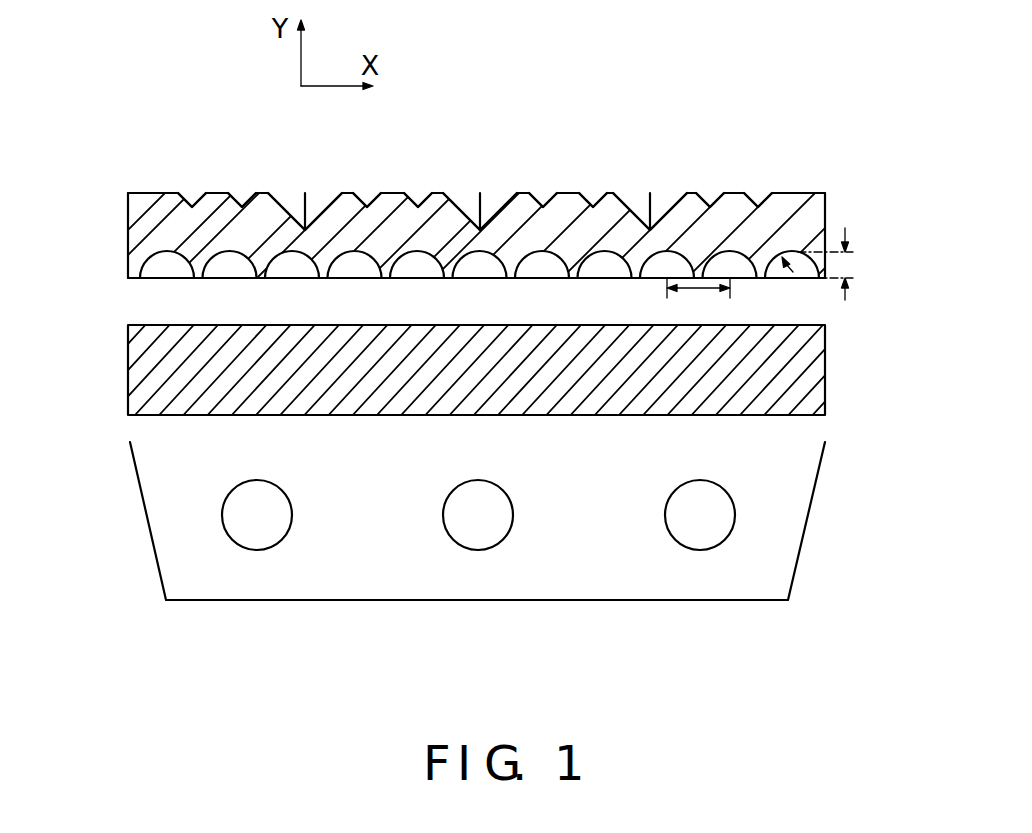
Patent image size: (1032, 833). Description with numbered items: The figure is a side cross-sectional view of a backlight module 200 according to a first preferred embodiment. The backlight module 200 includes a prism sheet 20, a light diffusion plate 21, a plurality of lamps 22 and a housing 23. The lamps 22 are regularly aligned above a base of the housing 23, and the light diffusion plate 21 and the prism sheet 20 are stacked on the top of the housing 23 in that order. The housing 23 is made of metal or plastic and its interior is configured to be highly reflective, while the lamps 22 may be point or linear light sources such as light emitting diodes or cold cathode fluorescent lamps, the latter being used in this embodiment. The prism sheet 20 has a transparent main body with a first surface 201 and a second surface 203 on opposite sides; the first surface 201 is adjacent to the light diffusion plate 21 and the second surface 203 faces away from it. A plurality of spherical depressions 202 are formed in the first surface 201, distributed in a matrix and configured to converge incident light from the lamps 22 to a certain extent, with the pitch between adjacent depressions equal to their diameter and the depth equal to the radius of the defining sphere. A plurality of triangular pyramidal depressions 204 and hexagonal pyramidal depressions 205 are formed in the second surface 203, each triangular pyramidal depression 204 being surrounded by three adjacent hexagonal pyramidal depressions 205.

The prism sheet 20 is at (472, 378).
The backlight module 200 is at (466, 212).
The first surface 201 is at (133, 287).
The spherical depressions 202 is at (355, 267).
The second surface 203 is at (216, 183).
The triangular pyramidal depressions 204 is at (542, 192).
The hexagonal pyramidal depressions 205 is at (670, 192).
The light diffusion plate 21 is at (817, 373).
The lamps 22 is at (707, 535).
The housing 23 is at (813, 498).